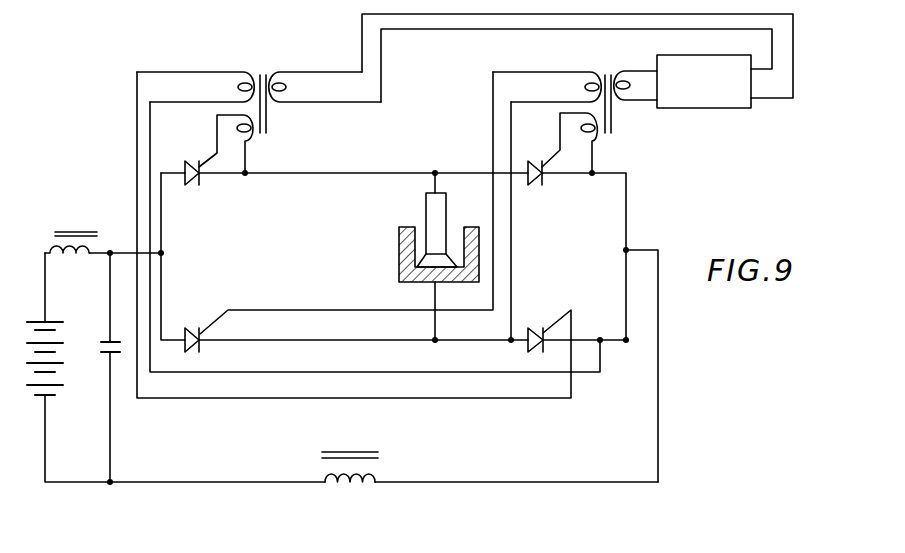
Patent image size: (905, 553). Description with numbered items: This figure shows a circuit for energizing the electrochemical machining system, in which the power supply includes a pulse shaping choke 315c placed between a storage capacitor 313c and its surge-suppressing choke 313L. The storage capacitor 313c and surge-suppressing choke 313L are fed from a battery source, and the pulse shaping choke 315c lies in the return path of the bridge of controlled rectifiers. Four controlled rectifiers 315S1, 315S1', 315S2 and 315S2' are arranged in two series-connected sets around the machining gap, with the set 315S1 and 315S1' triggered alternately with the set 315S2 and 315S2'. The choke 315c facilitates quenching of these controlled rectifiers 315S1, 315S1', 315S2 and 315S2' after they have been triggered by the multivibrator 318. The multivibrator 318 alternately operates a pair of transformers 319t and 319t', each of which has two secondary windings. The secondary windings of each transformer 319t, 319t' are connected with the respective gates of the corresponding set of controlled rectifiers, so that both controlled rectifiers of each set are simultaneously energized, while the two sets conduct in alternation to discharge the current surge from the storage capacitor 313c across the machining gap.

The transformer 319t' is at (259, 78).
The transformer 319t is at (575, 84).
The multivibrator 318 is at (727, 103).
The controlled rectifier 315S1 is at (240, 166).
The controlled rectifier 315S2 is at (225, 308).
The controlled rectifier 315S2' is at (568, 166).
The controlled rectifier 315S1' is at (560, 308).
The surge-suppressing choke 313L is at (105, 218).
The storage capacitor 313c is at (100, 340).
The pulse shaping choke 315c is at (376, 478).